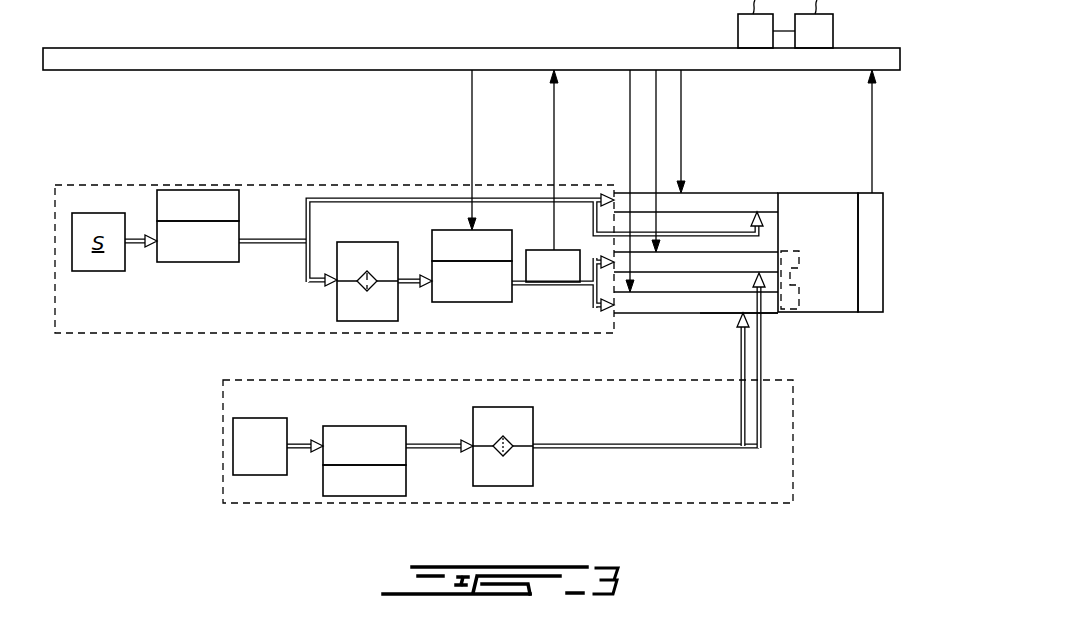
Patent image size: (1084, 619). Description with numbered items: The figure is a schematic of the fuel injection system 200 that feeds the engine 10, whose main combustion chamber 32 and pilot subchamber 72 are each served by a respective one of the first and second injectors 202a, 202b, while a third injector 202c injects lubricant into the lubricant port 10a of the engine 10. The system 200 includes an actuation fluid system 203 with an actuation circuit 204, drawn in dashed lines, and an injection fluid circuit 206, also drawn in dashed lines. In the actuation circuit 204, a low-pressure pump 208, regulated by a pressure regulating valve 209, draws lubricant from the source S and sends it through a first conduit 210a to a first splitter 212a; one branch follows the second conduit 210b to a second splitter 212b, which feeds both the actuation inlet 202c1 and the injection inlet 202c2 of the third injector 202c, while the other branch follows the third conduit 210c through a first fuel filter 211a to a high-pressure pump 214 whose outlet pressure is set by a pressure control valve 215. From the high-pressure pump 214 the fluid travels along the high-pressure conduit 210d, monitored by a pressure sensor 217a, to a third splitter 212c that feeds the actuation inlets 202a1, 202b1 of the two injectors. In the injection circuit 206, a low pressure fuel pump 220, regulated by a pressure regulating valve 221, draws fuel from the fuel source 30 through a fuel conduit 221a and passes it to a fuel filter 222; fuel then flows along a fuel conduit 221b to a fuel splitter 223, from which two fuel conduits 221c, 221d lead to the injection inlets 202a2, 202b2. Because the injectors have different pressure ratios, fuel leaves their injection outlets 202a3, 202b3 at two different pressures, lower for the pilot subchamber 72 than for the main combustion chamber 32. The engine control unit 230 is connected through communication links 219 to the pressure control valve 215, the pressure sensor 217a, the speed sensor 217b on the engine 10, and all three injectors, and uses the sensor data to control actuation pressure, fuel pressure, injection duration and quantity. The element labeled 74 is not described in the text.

The engine control unit 230 is at (519, 48).
The communication links 219 is at (472, 136).
The actuation inlet of the third injector 202c1 is at (612, 193).
The injection inlet of the third injector 202c2 is at (758, 230).
The third injector 202c is at (683, 167).
The first injector 202a is at (727, 277).
The actuation inlet of the first injector 202a1 is at (616, 262).
The injection inlet of the first injector 202a2 is at (757, 297).
The injection outlet of the first injector 202a3 is at (770, 272).
The second injector 202b is at (723, 354).
The actuation inlet of the second injector 202b1 is at (622, 322).
The injection inlet of the second injector 202b2 is at (740, 325).
The injection outlet of the second injector 202b3 is at (760, 313).
The engine 10 is at (822, 256).
The lubricant port 10a is at (788, 200).
The pilot subchamber 72 is at (792, 251).
The interface element 74 is at (800, 286).
The main combustion chamber 32 is at (800, 307).
The speed sensor 217b is at (883, 240).
The first splitter 212a is at (300, 216).
The second splitter 212b is at (582, 211).
The third splitter 212c is at (583, 300).
The first conduit 210a is at (137, 243).
The second conduit 210b is at (349, 200).
The third conduit 210c is at (412, 285).
The high-pressure conduit 210d is at (520, 286).
The pressure regulating valve 209 is at (198, 205).
The low-pressure pump 208 is at (198, 241).
The first fuel filter 211a is at (367, 281).
The pressure control valve 215 is at (472, 245).
The high-pressure pump 214 is at (472, 281).
The pressure sensor 217a is at (553, 266).
The actuation circuit 204 is at (78, 334).
The injection fluid circuit 206 is at (223, 482).
The actuation fluid system 203 is at (205, 354).
The fuel injection system 200 is at (893, 384).
The fuel source 30 is at (258, 478).
The low pressure fuel pump 220 is at (364, 445).
The pressure regulating valve 221 is at (364, 480).
The fuel filter 222 is at (503, 446).
The fuel conduit 221a is at (300, 443).
The fuel conduit 221b is at (640, 450).
The fuel conduit 221c is at (740, 397).
The fuel conduit 221d is at (763, 414).
The fuel splitter 223 is at (742, 460).